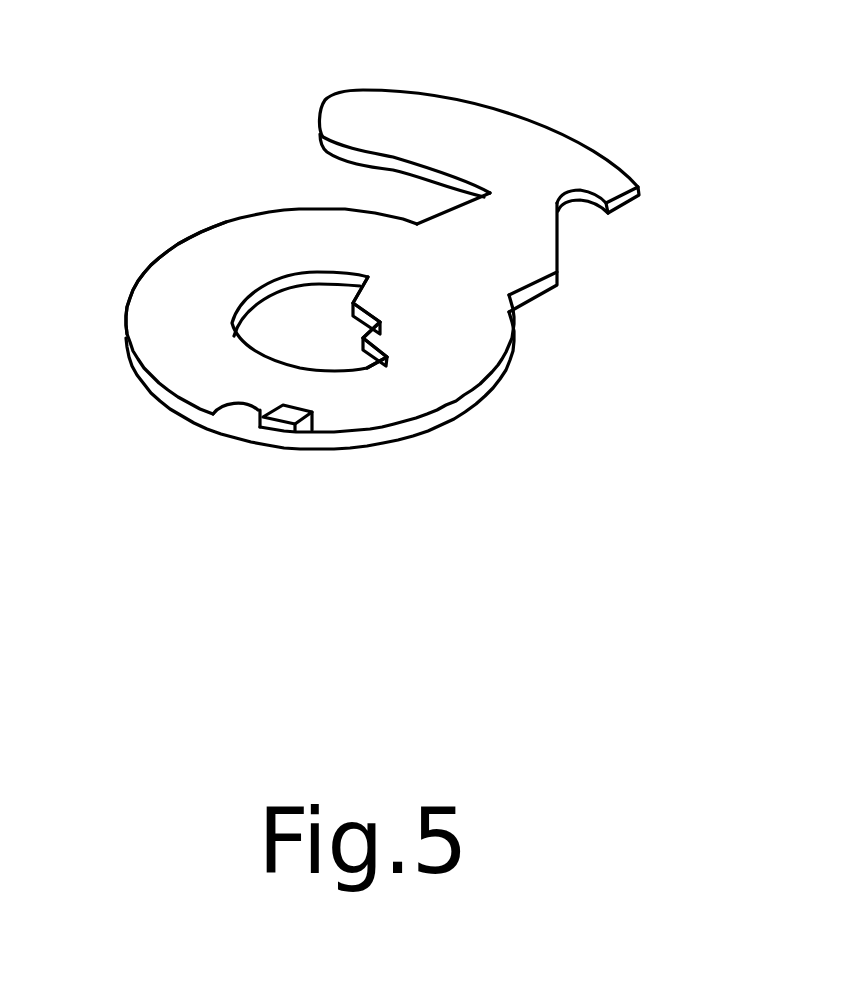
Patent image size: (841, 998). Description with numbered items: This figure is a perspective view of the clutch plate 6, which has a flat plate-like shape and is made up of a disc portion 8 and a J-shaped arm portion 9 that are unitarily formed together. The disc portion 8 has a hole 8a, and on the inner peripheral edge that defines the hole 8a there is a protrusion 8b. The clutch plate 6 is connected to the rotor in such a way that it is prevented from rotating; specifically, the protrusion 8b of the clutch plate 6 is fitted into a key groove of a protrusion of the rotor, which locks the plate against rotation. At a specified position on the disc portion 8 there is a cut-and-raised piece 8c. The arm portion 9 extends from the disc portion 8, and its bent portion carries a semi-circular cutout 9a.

The clutch plate 6 is at (489, 392).
The disc portion 8 is at (170, 246).
The hole 8a is at (272, 282).
The protrusion 8b is at (358, 312).
The cut-and-raised piece 8c is at (213, 411).
The arm portion 9 is at (531, 120).
The semi-circular cutout 9a is at (577, 212).